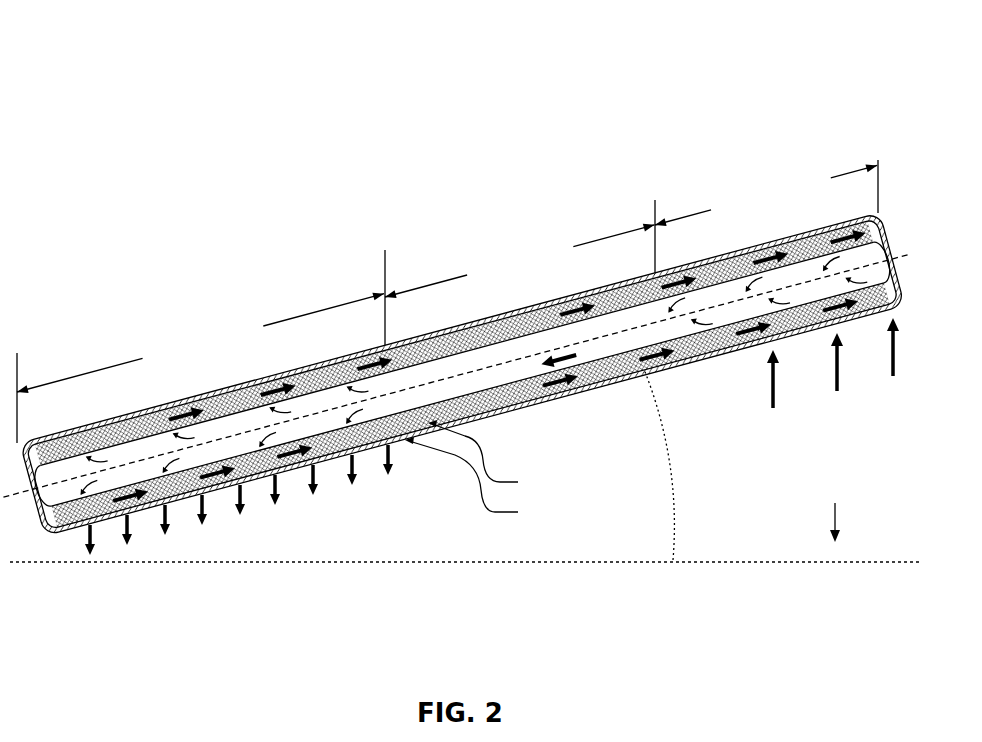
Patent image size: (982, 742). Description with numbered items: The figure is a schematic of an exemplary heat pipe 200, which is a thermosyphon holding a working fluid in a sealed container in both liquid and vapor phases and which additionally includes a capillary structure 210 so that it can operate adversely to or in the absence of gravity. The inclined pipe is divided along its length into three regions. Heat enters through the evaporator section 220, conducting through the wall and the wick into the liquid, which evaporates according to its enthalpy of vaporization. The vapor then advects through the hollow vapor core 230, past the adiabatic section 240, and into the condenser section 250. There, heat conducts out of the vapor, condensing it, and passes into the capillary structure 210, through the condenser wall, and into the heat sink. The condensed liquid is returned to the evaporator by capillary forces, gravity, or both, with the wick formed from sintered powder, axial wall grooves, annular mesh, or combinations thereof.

The heat pipe 200 is at (138, 139).
The capillary structure 210 is at (466, 387).
The evaporator section 220 is at (769, 214).
The hollow vapor core 230 is at (458, 379).
The adiabatic section 240 is at (522, 271).
The condenser section 250 is at (204, 364).